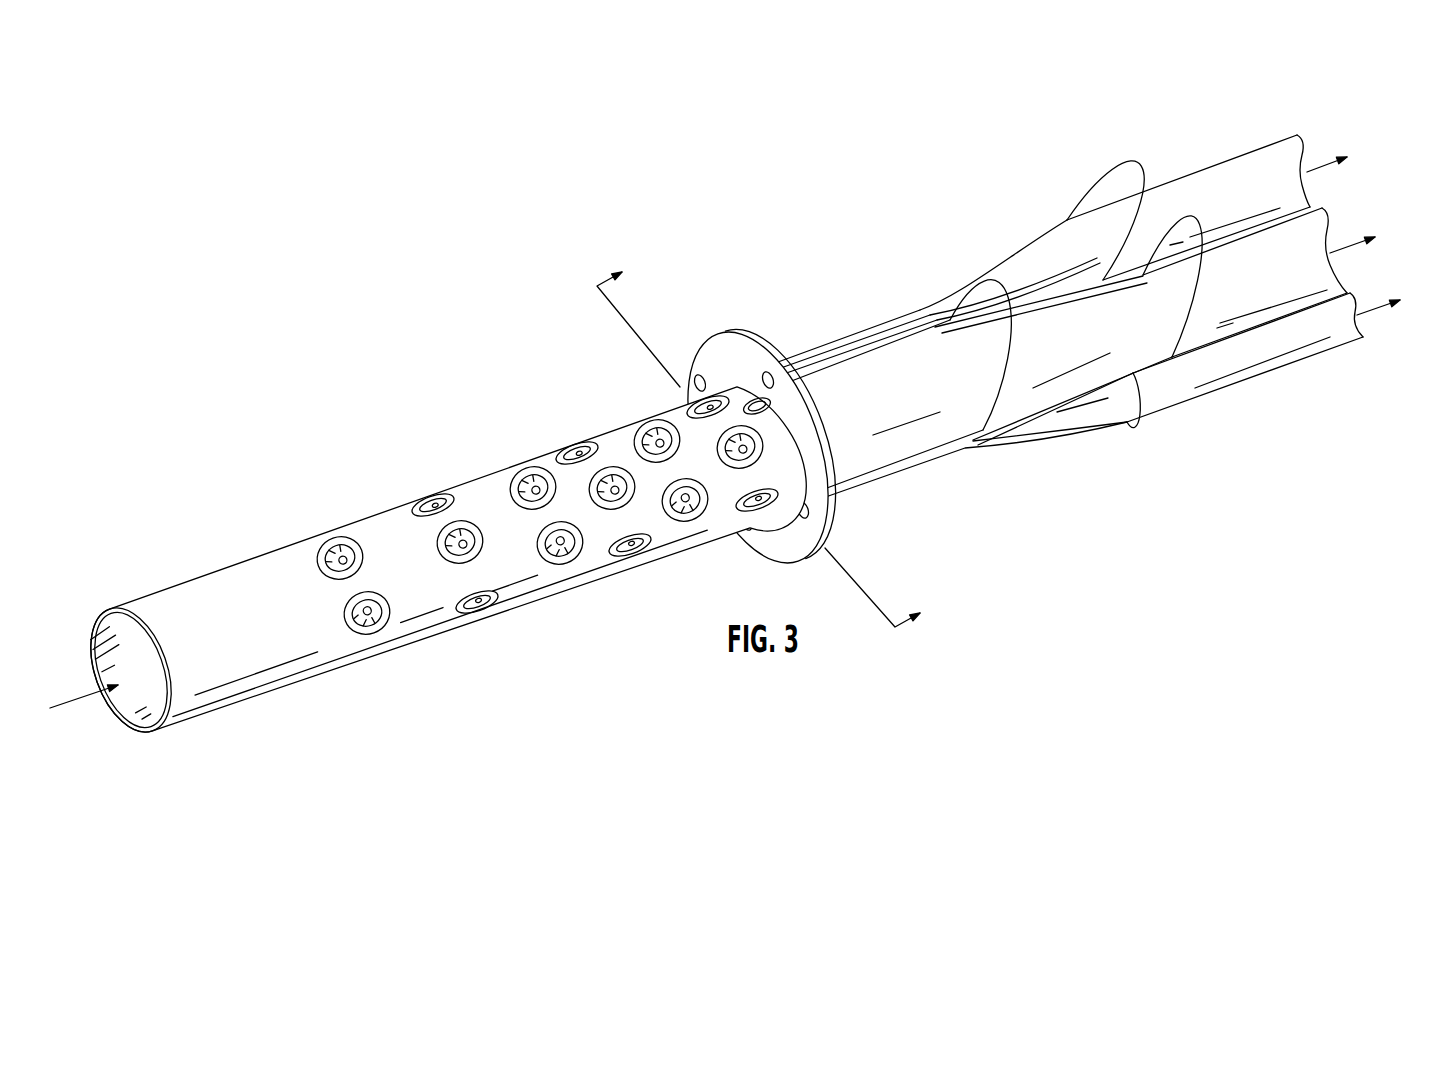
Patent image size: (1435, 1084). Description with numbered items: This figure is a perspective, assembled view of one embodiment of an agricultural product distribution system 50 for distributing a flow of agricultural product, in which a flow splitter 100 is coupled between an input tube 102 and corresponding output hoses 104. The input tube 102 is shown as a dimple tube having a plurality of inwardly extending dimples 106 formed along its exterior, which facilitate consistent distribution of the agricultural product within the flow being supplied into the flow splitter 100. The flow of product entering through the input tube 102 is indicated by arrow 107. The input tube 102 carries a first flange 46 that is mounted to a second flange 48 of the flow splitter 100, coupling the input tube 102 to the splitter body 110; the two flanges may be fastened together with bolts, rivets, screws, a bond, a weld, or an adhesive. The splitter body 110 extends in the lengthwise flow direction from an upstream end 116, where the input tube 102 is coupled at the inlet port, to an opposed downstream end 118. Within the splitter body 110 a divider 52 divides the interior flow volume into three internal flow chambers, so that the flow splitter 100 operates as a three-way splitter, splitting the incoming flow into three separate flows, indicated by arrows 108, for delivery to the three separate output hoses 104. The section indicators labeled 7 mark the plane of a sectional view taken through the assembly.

The section line 7- 7 is at (768, 449).
The first flange 46 is at (697, 358).
The second flange 48 is at (835, 518).
The agricultural product distribution system 50 is at (492, 270).
The divider 52 is at (953, 473).
The flow splitter 100 is at (868, 292).
The input tube 102 is at (377, 522).
The output hoses 104 is at (1253, 165).
The dimples 106 is at (577, 440).
The arrow 107 is at (77, 702).
The arrows 108 is at (1343, 166).
The splitter body 110 is at (873, 483).
The upstream end 116 is at (761, 297).
The downstream end 118 is at (1167, 152).